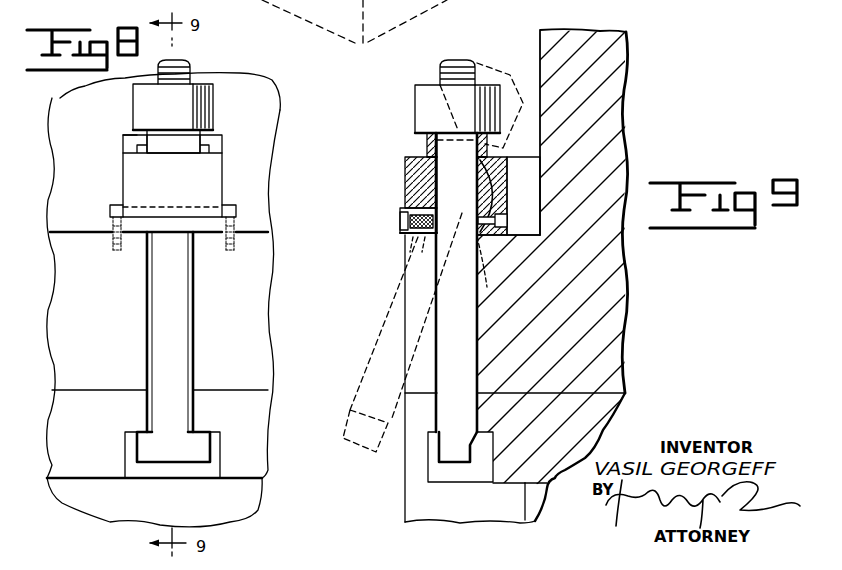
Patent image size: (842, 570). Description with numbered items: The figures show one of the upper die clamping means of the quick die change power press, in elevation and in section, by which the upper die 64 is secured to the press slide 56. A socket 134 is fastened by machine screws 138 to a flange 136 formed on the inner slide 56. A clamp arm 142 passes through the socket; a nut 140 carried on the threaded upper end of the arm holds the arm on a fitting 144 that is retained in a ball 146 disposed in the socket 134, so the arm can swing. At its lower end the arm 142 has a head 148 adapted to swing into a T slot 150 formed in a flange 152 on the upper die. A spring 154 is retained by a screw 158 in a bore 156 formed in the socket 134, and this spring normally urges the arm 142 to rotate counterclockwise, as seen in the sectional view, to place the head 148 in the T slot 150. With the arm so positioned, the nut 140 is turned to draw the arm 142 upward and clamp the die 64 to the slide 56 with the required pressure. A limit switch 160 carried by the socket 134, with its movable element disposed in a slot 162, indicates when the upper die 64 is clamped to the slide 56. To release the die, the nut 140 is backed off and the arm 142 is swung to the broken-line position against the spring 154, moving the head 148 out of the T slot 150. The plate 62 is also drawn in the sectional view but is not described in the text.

In FIG. 8, the press slide 56 is at (268, 215).
In FIG. 9, the press slide 56 is at (628, 290).
In FIG. 9, the plate 62 is at (501, 487).
In FIG. 8, the upper die 64 is at (250, 505).
In FIG. 9, the upper die 64 is at (548, 497).
In FIG. 8, the socket 134 is at (218, 180).
In FIG. 9, the socket 134 is at (406, 181).
In FIG. 8, the flange 136 is at (252, 300).
In FIG. 9, the flange 136 is at (527, 233).
In FIG. 8, the machine screws 138 is at (110, 207).
In FIG. 8, the nut 140 is at (207, 108).
In FIG. 9, the nut 140 is at (426, 106).
In FIG. 8, the clamp arm 142 is at (177, 332).
In FIG. 9, the clamp arm 142 is at (445, 286).
In FIG. 8, the fitting 144 is at (200, 143).
In FIG. 9, the fitting 144 is at (427, 147).
In FIG. 9, the ball 146 is at (420, 180).
In FIG. 8, the head 148 is at (200, 441).
In FIG. 9, the head 148 is at (437, 457).
In FIG. 8, the T slot 150 is at (217, 451).
In FIG. 9, the T slot 150 is at (490, 470).
In FIG. 8, the flange 152 is at (103, 470).
In FIG. 9, the spring 154 is at (400, 235).
In FIG. 9, the bore 156 is at (421, 256).
In FIG. 8, the screw 158 is at (125, 135).
In FIG. 9, the screw 158 is at (400, 218).
In FIG. 9, the limit switch 160 is at (483, 239).
In FIG. 9, the slot 162 is at (486, 281).